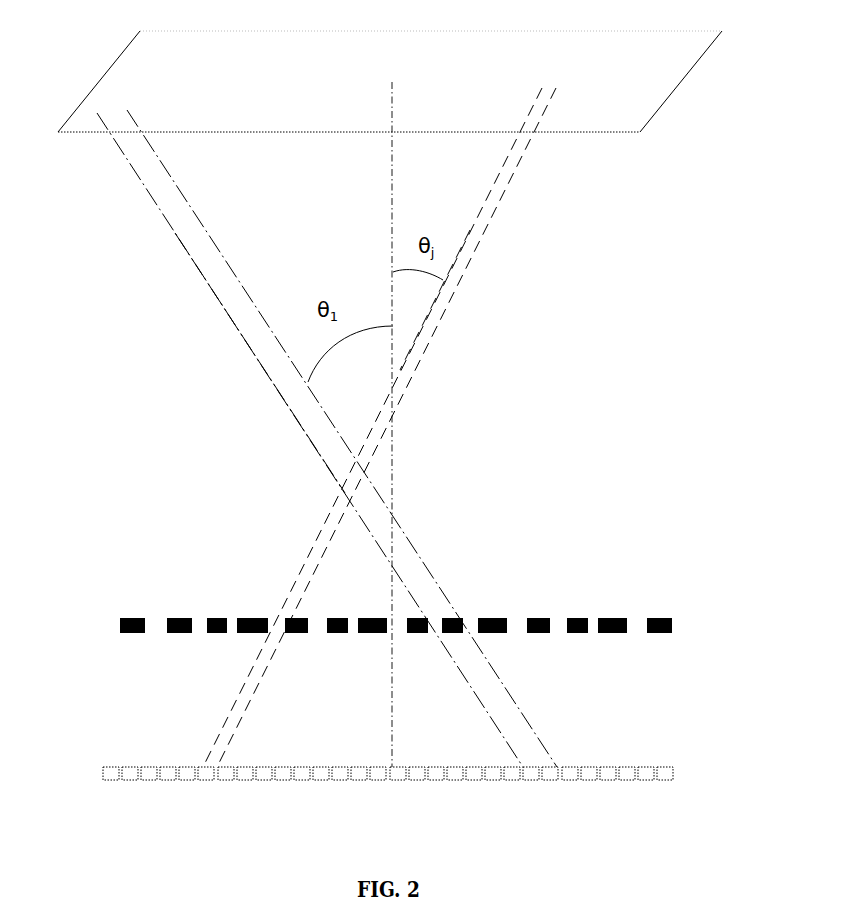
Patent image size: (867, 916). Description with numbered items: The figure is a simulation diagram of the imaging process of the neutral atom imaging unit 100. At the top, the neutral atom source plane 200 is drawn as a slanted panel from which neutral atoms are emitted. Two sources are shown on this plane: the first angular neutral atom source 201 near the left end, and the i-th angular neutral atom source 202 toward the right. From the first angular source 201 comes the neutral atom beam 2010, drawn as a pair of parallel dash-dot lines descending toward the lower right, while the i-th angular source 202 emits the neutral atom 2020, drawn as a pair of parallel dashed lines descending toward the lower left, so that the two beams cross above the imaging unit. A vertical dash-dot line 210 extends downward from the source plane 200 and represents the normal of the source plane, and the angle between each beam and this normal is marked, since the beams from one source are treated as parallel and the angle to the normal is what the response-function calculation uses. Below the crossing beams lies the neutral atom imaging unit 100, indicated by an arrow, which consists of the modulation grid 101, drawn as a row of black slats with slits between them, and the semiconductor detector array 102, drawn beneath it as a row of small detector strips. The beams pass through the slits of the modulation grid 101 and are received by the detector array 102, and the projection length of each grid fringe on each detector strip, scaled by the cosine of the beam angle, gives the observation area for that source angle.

The neutral atom imaging unit 100 is at (420, 669).
The modulation grid 101 is at (540, 617).
The semiconductor detector array 102 is at (647, 782).
The neutral atom source plane 200 is at (660, 105).
The first angular neutral atom source 201 is at (92, 116).
The neutral atom beam emitted by the first angular neutral atom source 2010 is at (260, 368).
The i-th angular neutral atom source 202 is at (550, 98).
The neutral atom emitted by the i-th angular neutral atom source 2020 is at (432, 303).
The normal line of display panel 210 is at (393, 455).